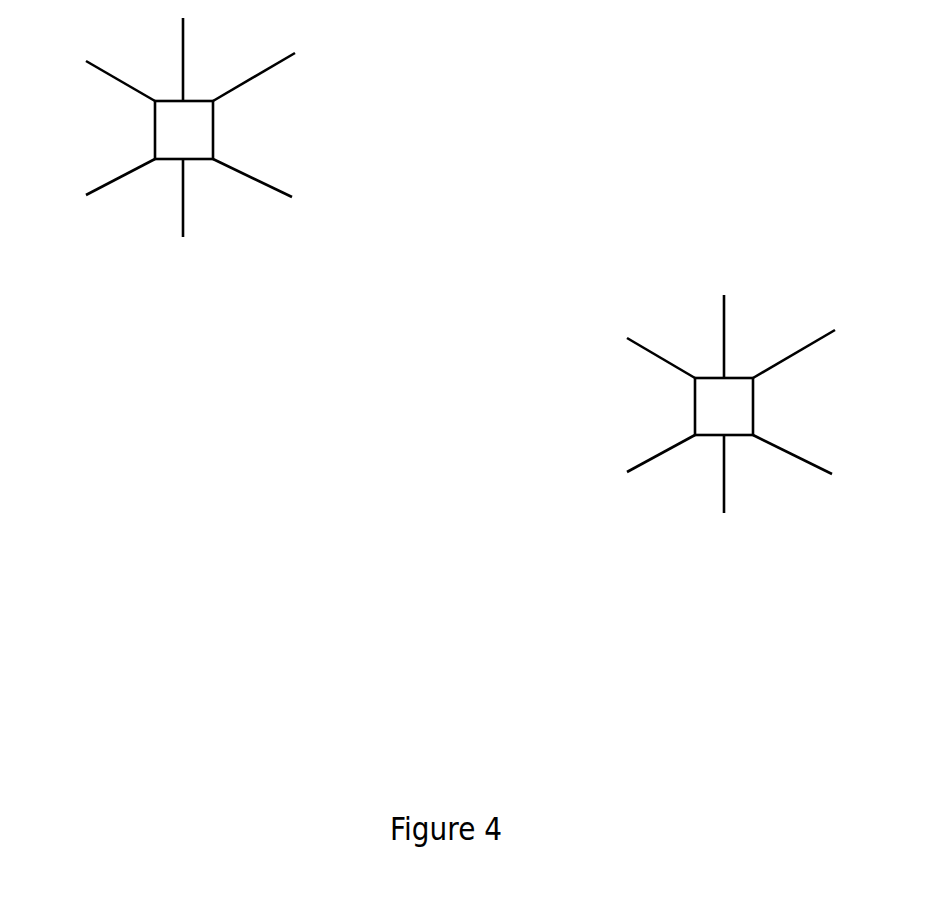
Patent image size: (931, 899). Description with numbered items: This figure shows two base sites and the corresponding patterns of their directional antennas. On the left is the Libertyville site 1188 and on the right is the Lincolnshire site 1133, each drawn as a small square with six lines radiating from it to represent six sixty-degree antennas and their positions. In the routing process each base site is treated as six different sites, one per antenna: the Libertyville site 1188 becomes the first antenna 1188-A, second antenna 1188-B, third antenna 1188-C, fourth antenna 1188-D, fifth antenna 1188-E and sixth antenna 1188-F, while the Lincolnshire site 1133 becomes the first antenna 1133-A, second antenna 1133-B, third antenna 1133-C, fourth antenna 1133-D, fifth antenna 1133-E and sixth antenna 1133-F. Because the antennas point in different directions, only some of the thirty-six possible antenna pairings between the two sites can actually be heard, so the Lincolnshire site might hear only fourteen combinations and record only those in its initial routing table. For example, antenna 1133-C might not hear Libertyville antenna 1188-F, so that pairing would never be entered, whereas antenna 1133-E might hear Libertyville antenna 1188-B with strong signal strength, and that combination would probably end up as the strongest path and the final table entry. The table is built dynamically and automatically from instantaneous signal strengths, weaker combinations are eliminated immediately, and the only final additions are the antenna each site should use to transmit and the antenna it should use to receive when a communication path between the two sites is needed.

The Libertyville site 1188 is at (170, 214).
The first antenna 1188-A is at (230, 56).
The second antenna 1188-B is at (267, 99).
The third antenna 1188-C is at (248, 204).
The fourth antenna 1188-D is at (128, 204).
The fifth antenna 1188-E is at (91, 156).
The sixth antenna 1188-F is at (106, 56).
The Lincolnshire site 1133 is at (755, 496).
The first antenna 1133-A is at (765, 336).
The second antenna 1133-B is at (804, 374).
The third antenna 1133-C is at (787, 476).
The fourth antenna 1133-D is at (671, 474).
The fifth antenna 1133-E is at (639, 432).
The sixth antenna 1133-F is at (656, 337).